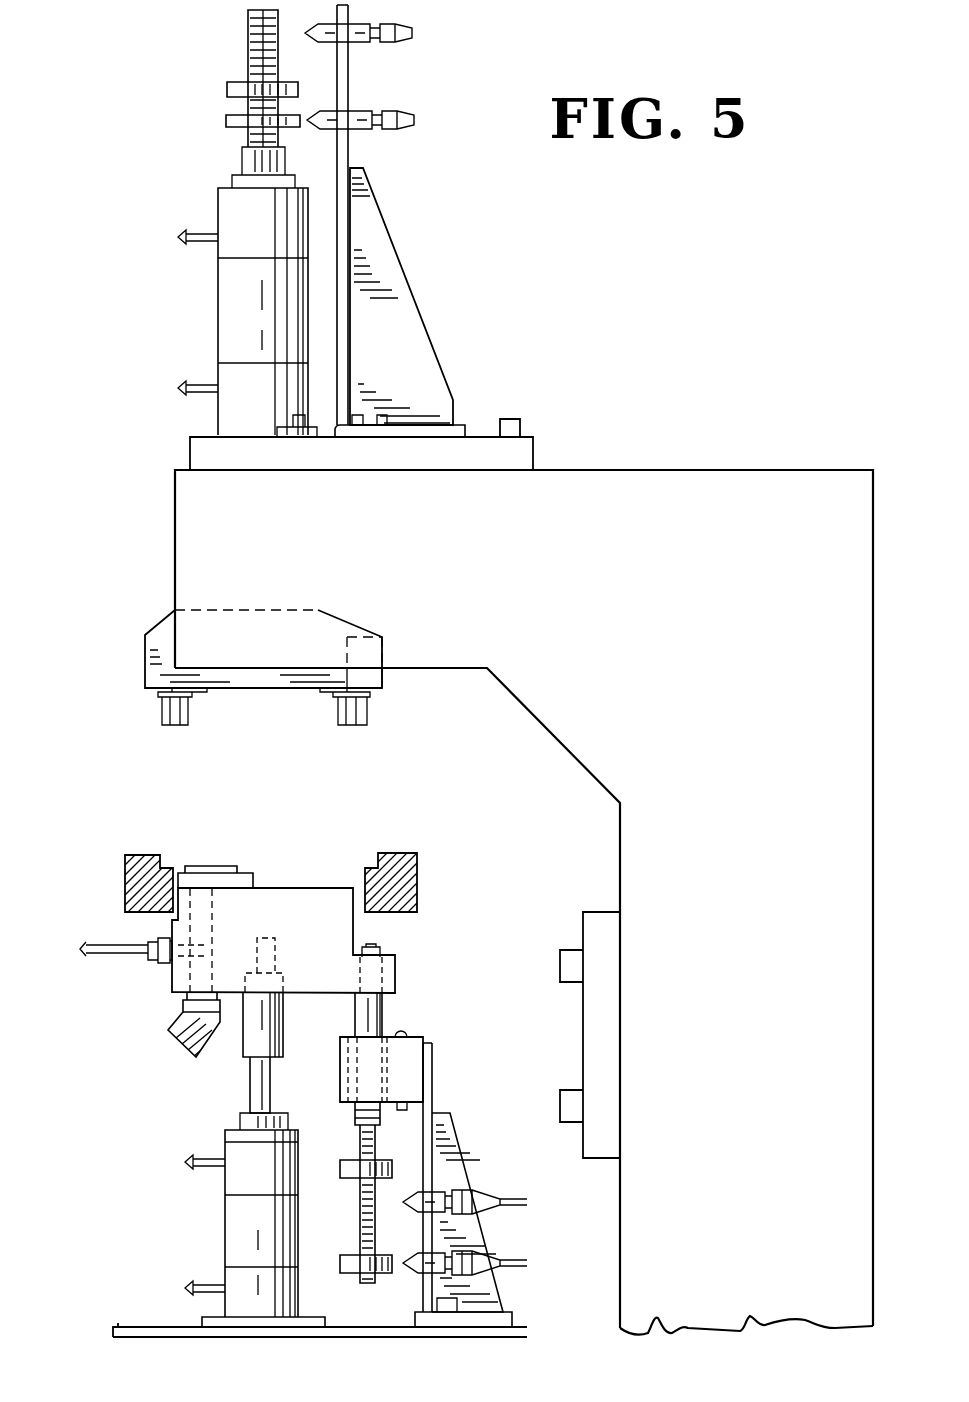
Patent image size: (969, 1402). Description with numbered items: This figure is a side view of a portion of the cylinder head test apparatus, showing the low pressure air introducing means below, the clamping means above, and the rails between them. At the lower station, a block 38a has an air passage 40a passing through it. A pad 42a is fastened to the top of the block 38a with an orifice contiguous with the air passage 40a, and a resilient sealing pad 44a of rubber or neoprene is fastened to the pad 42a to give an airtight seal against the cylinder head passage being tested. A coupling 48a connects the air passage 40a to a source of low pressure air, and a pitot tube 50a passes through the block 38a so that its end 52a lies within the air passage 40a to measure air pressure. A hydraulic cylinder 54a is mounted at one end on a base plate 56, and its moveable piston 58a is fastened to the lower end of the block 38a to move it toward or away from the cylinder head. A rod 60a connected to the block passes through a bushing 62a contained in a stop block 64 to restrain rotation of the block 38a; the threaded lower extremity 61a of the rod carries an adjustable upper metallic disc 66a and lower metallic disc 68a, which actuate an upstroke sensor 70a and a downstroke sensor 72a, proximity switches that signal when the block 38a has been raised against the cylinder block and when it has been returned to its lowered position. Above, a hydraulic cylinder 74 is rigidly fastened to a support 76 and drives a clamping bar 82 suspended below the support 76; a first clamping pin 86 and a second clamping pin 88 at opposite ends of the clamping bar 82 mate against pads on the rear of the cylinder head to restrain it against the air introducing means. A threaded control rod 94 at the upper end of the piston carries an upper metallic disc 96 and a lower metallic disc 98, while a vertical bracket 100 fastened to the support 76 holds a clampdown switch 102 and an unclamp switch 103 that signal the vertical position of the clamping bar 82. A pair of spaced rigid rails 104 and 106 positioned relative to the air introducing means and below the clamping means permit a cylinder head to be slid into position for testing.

The block 38a is at (330, 890).
The air passage 40a is at (200, 900).
The pad 42a is at (255, 877).
The sealing pad 44a is at (222, 866).
The coupling 48a is at (168, 1022).
The pitot tube 50a is at (128, 944).
The end of pitot tube 52a is at (203, 953).
The hydraulic cylinder 54a is at (242, 1217).
The base plate 56 is at (132, 1333).
The moveable piston 58a is at (262, 1080).
The rod 60a is at (358, 1013).
The lower extremity of rod 61a is at (355, 1130).
The stem housing 62a is at (385, 1037).
The stop block 64 is at (415, 1045).
The upper metallic disc 66a is at (343, 1168).
The lower metallic disc 68a is at (343, 1268).
The upstroke sensor 70a is at (472, 1197).
The downstroke sensor 72a is at (475, 1257).
The hydraulic cylinder 74 is at (243, 287).
The support 76 is at (523, 458).
The clamping bar 82 is at (145, 663).
The first clamping pin 86 is at (176, 718).
The second clamping pin 88 is at (367, 718).
The control rod 94 is at (246, 33).
The upper metallic disc 96 is at (228, 84).
The lower metallic disc 98 is at (228, 122).
The vertical bracket 100 is at (393, 322).
The clampdown switch 102 is at (412, 124).
The unclamp switch 103 is at (360, 47).
The rigid rail 104 is at (413, 867).
The rigid rail 106 is at (130, 855).